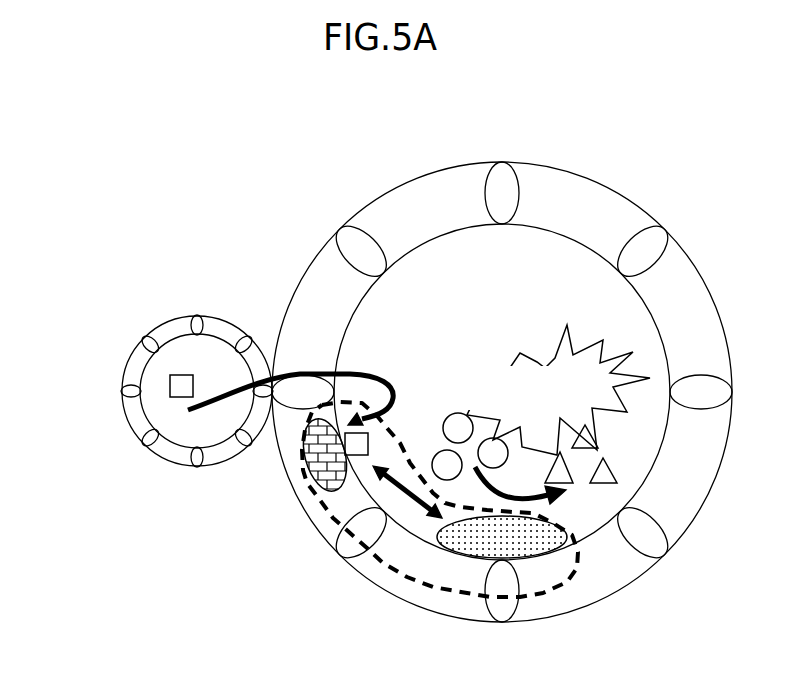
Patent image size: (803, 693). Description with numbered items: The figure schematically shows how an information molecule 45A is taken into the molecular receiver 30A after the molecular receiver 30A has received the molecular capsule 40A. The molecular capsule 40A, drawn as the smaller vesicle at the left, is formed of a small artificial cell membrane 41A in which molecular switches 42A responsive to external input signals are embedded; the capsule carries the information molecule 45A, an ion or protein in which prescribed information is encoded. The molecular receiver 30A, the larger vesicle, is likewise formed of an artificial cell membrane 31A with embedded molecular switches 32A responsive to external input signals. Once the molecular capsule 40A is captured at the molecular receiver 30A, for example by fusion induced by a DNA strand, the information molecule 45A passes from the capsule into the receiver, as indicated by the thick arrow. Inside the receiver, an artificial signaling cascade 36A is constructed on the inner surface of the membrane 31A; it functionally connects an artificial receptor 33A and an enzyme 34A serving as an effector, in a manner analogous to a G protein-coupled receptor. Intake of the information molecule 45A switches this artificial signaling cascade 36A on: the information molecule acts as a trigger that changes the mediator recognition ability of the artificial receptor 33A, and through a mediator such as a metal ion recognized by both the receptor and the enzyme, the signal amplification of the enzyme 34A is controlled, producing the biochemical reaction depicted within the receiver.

The molecular receiver 30A is at (710, 149).
The artificial cell membrane 31A is at (417, 592).
The molecular switch 32A is at (347, 232).
The artificial receptor 33A is at (312, 472).
The enzyme 34A is at (578, 542).
The artificial signaling cascade 36A is at (465, 600).
The molecular capsule 40A is at (92, 501).
The artificial cell membrane 41A is at (132, 418).
The molecular switch 42A is at (201, 315).
The information molecule 45A is at (177, 376).